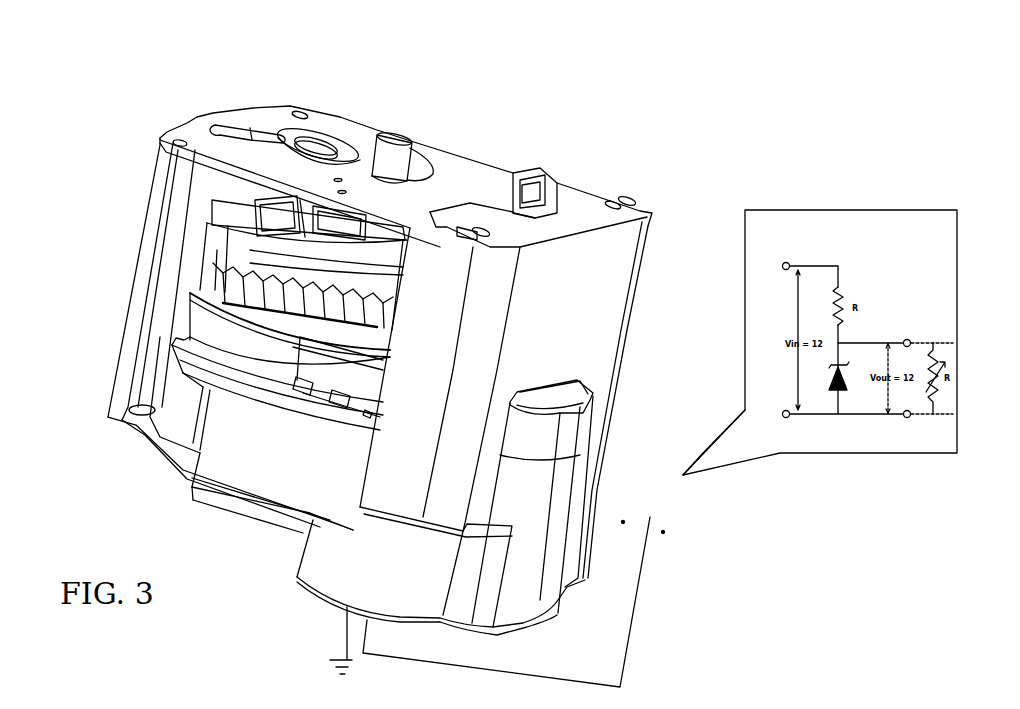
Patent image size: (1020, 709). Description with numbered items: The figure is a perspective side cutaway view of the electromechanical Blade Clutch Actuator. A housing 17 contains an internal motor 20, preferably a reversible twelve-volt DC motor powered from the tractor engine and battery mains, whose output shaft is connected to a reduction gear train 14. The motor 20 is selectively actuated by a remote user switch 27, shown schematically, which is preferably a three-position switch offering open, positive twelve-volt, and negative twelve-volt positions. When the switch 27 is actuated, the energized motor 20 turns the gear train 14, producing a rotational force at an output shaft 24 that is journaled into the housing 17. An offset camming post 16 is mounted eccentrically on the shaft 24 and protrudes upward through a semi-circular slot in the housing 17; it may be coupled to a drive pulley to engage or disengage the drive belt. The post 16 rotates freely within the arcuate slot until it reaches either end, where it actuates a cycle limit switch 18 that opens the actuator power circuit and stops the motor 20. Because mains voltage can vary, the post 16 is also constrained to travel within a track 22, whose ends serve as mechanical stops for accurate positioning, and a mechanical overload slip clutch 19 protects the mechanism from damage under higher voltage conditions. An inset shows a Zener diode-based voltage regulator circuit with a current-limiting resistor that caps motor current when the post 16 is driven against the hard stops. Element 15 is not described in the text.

The reduction gear train 14 is at (258, 438).
The frame top plate 15 is at (177, 148).
The offset camming post 16 is at (397, 143).
The housing 17 is at (577, 313).
The cycle limit switch 18 is at (227, 200).
The mechanical overload slip clutch 19 is at (257, 277).
The motor 20 is at (404, 567).
The track 22 is at (245, 128).
The output shaft 24 is at (323, 153).
The remote user switch 27 is at (546, 587).